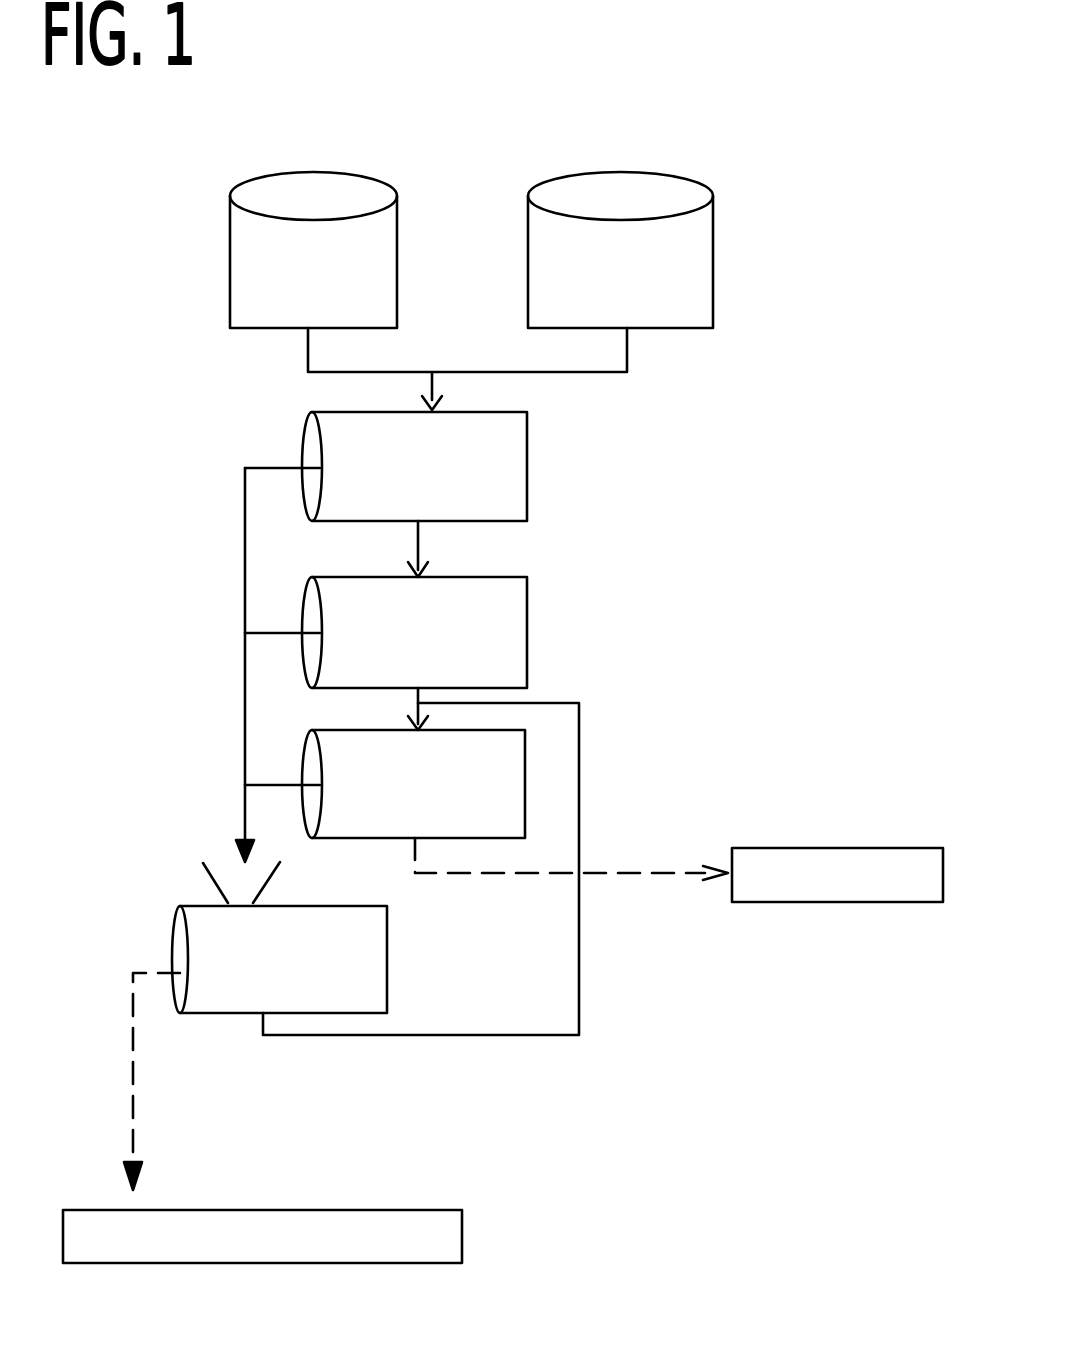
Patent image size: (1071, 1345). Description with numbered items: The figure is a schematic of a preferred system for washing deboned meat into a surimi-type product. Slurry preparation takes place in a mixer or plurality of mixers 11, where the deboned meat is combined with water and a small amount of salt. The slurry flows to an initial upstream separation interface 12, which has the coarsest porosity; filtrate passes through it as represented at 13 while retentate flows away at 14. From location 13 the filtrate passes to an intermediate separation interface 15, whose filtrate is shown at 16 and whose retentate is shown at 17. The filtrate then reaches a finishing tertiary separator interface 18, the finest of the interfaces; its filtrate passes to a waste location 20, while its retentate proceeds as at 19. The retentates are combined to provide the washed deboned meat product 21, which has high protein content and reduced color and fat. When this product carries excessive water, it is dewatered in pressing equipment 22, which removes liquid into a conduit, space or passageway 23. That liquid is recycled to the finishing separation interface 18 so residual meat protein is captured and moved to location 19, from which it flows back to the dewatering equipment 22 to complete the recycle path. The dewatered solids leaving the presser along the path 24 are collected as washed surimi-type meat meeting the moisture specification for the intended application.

The mixer 11 is at (230, 260).
The upstream separation interface 12 is at (527, 440).
The filtrate 13 is at (418, 545).
The retentate 14 is at (262, 468).
The intermediate separation interface 15 is at (527, 621).
The filtrate 16 is at (418, 695).
The retentate 17 is at (262, 633).
The finishing tertiary separator interface 18 is at (525, 778).
The retentate 19 is at (270, 785).
The waste location 20 is at (825, 848).
The washed deboned meat product 21 is at (243, 825).
The pressing equipment 22 is at (387, 950).
The passageway 23 is at (480, 1040).
The output line 24 is at (132, 1082).